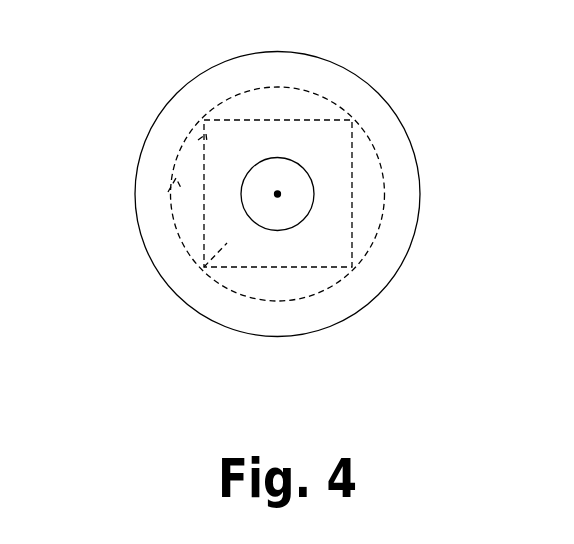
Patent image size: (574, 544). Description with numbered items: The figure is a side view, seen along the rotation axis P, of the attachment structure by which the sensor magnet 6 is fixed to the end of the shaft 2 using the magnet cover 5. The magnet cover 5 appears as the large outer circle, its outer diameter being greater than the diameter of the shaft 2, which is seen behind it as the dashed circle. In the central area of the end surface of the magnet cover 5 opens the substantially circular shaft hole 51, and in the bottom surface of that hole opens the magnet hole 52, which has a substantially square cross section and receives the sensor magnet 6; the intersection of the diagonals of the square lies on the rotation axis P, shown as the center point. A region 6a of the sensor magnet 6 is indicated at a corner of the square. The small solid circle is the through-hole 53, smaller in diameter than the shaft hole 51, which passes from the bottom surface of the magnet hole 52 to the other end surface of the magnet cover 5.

The shaft 2 is at (372, 141).
The magnet cover 5 is at (410, 252).
The sensor magnet 6 is at (277, 267).
The corner region of support portion 6a is at (204, 267).
The shaft hole 51 is at (168, 192).
The magnet hole 52 is at (198, 140).
The through-hole 53 is at (306, 212).
The rotation axis P is at (280, 193).